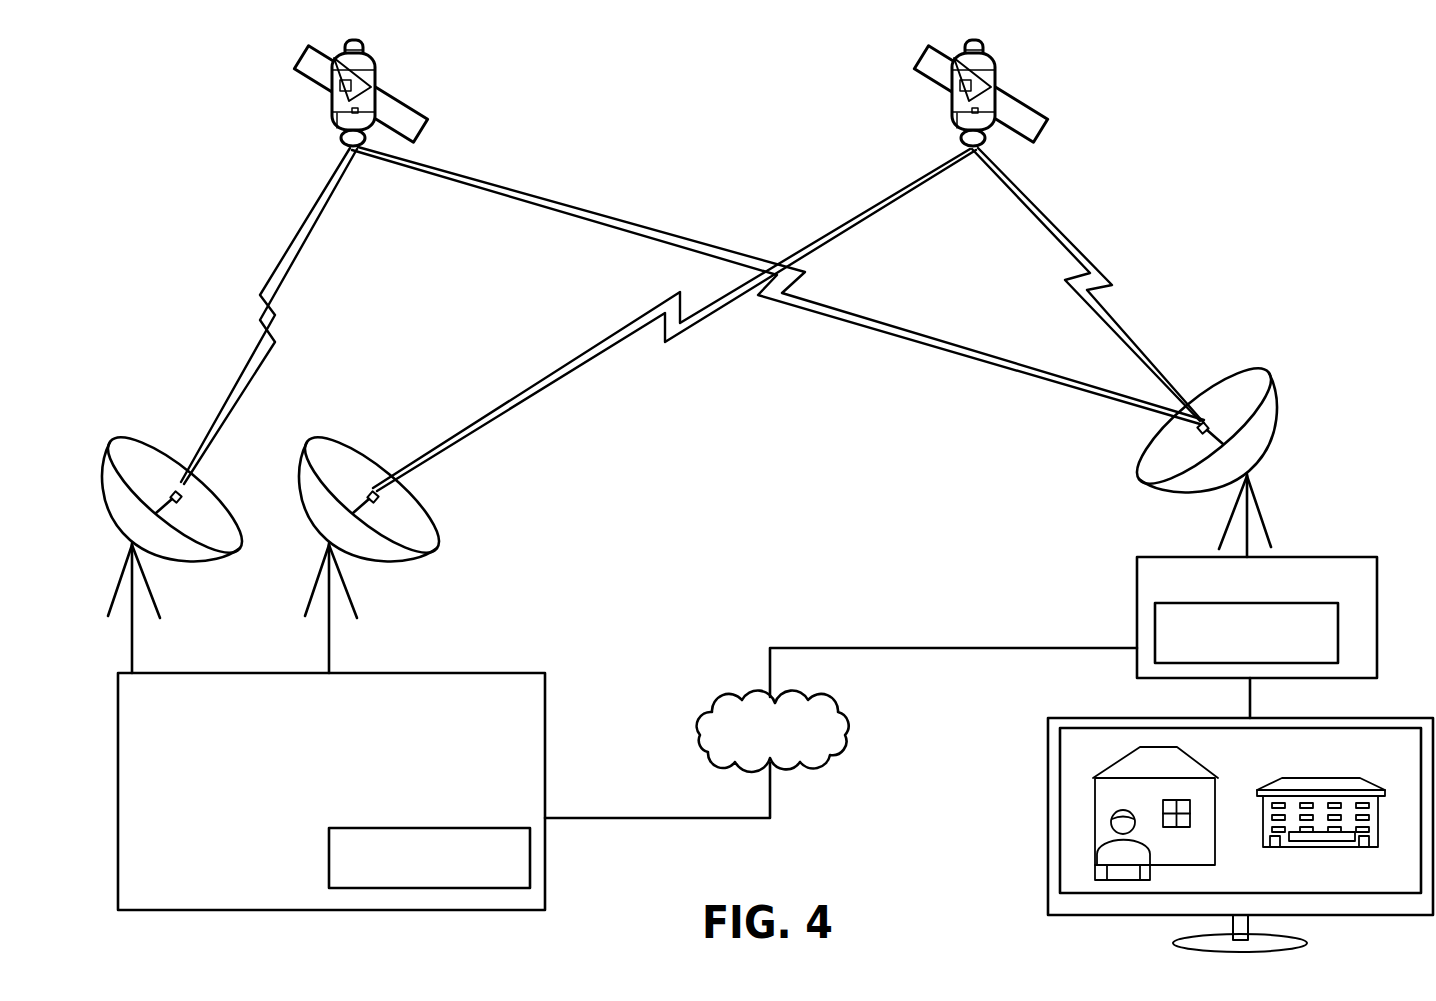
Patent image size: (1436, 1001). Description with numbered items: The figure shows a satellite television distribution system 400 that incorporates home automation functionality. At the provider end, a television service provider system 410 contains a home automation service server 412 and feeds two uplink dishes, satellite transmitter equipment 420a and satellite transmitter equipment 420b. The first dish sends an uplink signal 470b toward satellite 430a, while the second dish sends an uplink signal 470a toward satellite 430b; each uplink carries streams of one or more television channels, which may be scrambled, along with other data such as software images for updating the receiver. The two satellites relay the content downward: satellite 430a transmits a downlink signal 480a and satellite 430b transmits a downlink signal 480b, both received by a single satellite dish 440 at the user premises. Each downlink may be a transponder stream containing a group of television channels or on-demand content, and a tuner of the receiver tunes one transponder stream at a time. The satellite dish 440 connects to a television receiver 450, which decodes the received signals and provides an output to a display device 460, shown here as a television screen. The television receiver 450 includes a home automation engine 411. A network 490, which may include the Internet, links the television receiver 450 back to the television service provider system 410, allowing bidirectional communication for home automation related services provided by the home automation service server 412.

The satellite television distribution system 400 is at (191, 122).
The television service provider system 410 is at (331, 764).
The home automation engine 411 is at (1246, 633).
The home automation service server 412 is at (429, 858).
The satellite transmitter equipment 420a is at (124, 441).
The satellite transmitter equipment 420b is at (320, 437).
The satellite 430a is at (415, 110).
The satellite 430b is at (1039, 110).
The satellite dish 440 is at (1256, 368).
The television receiver 450 is at (1257, 590).
The display device 460 is at (1399, 716).
The uplink signal 470a is at (834, 230).
The uplink signal 470b is at (300, 252).
The downlink signal 480a is at (540, 194).
The downlink signal 480b is at (1062, 234).
The network 490 is at (705, 712).